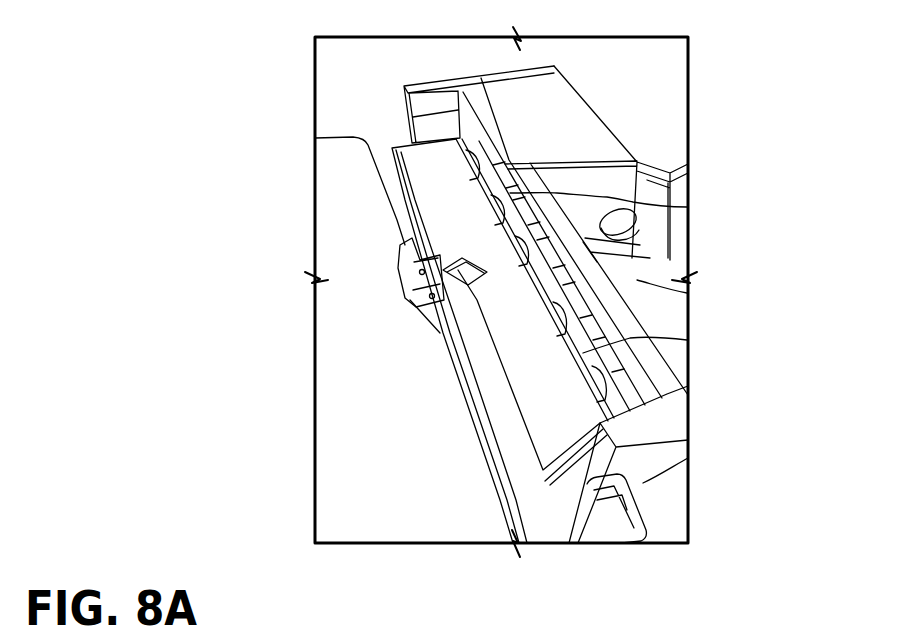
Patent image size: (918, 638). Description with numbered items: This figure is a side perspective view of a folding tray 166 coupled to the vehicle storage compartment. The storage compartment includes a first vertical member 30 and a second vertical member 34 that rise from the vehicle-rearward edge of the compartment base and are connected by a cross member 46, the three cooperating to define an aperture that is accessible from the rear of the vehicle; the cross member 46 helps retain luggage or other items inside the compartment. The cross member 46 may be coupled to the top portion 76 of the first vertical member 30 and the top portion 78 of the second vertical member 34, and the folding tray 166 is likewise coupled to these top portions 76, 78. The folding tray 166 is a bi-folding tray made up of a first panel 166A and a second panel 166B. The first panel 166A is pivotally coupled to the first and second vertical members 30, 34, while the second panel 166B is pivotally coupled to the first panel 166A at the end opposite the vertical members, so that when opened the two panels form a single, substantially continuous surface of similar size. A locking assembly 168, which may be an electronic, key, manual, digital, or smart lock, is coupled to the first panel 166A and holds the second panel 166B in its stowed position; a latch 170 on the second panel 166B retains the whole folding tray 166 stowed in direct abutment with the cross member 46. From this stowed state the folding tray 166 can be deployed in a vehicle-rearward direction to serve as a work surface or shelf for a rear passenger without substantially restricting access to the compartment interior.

The first vertical member 30 is at (503, 94).
The second vertical member 34 is at (655, 426).
The cross member 46 is at (598, 271).
The top portion of the first vertical member 76 is at (433, 118).
The top portion of the second vertical member 78 is at (583, 487).
The folding tray 166 is at (392, 138).
The first panel 166A is at (585, 352).
The second panel 166B is at (537, 393).
The locking assembly 168 is at (690, 205).
The latch 170 is at (455, 268).